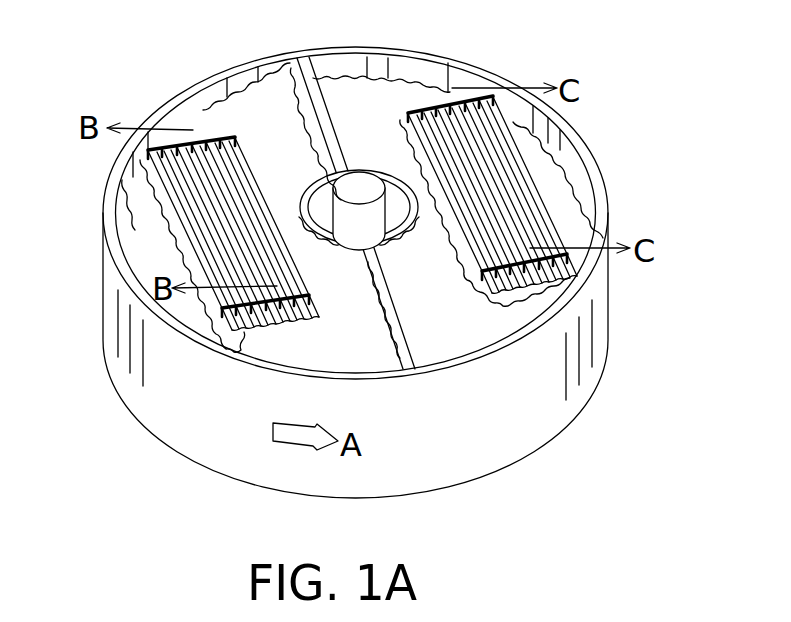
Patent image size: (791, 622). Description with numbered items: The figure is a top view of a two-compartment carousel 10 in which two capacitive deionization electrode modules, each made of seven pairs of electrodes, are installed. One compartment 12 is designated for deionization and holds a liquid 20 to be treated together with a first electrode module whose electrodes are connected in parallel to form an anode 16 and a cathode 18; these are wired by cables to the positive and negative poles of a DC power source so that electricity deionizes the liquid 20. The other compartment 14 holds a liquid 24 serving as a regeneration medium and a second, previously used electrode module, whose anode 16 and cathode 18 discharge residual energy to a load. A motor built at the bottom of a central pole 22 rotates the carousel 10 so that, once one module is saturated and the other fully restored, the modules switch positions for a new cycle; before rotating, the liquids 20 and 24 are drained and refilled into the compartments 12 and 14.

The two-compartment carousel 10 is at (597, 333).
The compartment 12 is at (275, 73).
The compartment 14 is at (323, 63).
The anode 16 is at (205, 110).
The cathode 18 is at (412, 108).
The liquid 20 is at (137, 232).
The central pole 22 is at (353, 177).
The liquid 24 is at (598, 167).